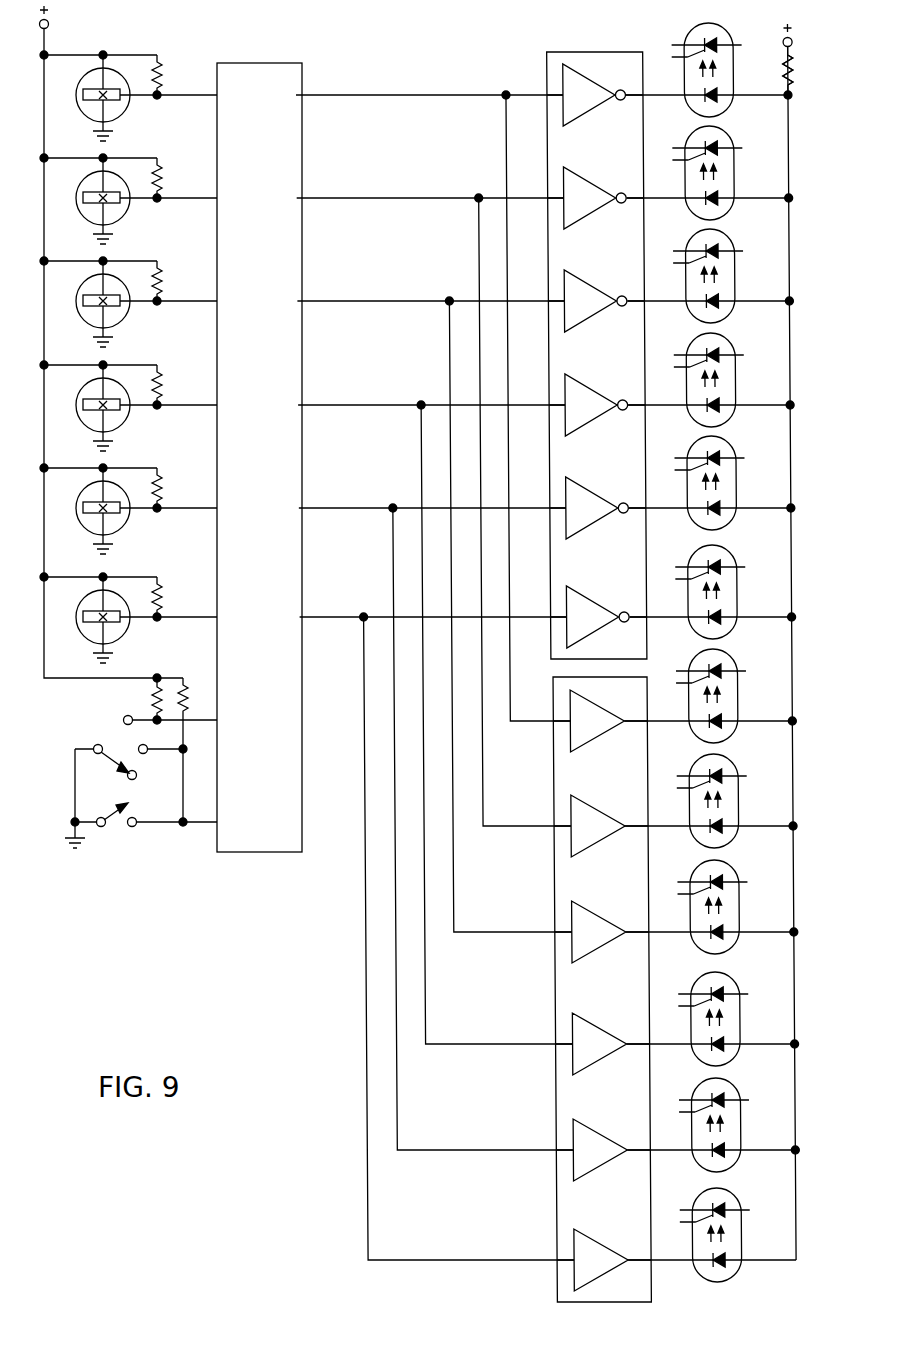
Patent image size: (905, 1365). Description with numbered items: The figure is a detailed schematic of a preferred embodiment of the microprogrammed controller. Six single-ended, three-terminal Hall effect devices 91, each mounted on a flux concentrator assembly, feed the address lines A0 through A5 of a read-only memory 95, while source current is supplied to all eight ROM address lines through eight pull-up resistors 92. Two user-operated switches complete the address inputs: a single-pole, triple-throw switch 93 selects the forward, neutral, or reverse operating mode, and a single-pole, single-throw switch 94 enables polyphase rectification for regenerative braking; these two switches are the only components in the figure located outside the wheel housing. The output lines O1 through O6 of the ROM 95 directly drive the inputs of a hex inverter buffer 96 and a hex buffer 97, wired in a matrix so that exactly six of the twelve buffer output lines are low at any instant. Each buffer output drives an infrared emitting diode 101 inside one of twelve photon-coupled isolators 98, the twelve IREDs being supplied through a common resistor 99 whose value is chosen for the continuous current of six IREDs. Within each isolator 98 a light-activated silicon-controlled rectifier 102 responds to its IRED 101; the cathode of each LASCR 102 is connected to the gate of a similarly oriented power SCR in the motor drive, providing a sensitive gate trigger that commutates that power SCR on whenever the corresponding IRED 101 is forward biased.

The Hall effect device 91 is at (115, 107).
The pull-up resistor 92 is at (157, 72).
The single-pole, triple-throw switch 93 is at (117, 747).
The single-pole, single-throw switch 94 is at (112, 824).
The read-only memory 95 is at (298, 457).
The hex inverter buffer 96 is at (637, 342).
The hex buffer 97 is at (637, 978).
The photon-coupled isolator 98 is at (720, 137).
The resistor 99 is at (786, 70).
The infrared emitting diode 101 is at (720, 511).
The light-activated silicon-controlled rectifier 102 is at (720, 356).